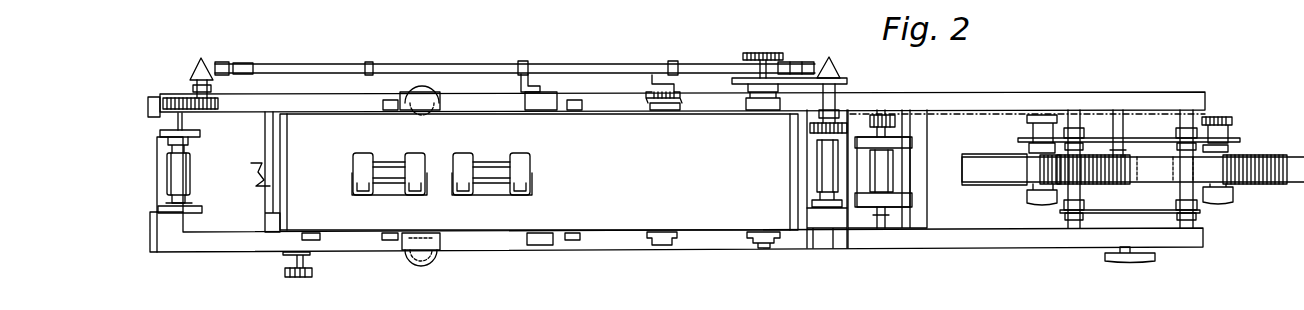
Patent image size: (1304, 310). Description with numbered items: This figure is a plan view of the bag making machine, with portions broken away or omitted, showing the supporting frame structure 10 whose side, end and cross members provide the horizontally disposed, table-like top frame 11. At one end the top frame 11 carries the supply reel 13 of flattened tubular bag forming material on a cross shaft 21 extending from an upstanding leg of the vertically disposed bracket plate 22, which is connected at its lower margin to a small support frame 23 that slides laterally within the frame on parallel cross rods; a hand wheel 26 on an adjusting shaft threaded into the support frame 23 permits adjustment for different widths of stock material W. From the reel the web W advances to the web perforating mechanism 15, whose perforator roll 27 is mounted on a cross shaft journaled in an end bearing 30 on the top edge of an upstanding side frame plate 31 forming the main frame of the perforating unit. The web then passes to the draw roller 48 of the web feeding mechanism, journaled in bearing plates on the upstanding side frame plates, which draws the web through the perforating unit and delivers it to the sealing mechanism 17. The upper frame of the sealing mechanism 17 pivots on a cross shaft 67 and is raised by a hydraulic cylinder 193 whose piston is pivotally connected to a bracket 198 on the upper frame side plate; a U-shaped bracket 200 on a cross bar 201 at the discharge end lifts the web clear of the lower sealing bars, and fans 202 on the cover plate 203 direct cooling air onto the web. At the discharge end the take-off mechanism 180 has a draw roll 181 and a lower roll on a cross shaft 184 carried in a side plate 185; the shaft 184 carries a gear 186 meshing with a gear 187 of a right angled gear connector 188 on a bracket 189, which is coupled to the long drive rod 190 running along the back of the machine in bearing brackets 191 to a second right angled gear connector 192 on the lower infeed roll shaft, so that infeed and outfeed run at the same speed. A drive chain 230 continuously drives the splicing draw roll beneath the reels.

The supporting frame structure 10 is at (188, 253).
The top frame 11 is at (1052, 96).
The reel 13 is at (1277, 184).
The web perforating mechanism 15 is at (878, 230).
The sealing mechanism 17 is at (624, 165).
The cross shaft 21 is at (1040, 200).
The bracket plate 22 is at (1240, 138).
The support frame 23 is at (1195, 118).
The hand wheel 26 is at (1142, 261).
The perforator roll 27 is at (907, 155).
The end bearing 30 is at (882, 205).
The side frame plate 31 is at (810, 236).
The draw roller 48 is at (817, 165).
The cross shaft 67 is at (765, 248).
The take-off mechanism 180 is at (173, 165).
The draw roll 181 is at (192, 167).
The cross shaft 184 is at (178, 125).
The side plate 185 is at (200, 216).
The gear 186 is at (160, 105).
The gear 187 is at (222, 100).
The right angled gear connector 188 is at (200, 58).
The bracket 189 is at (188, 86).
The drive rod 190 is at (325, 63).
The bearing bracket 191 is at (527, 77).
The right angled gear connector 192 is at (825, 57).
The hydraulic cylinder 193 is at (434, 258).
The bracket 198 is at (407, 252).
The U-shaped bracket 200 is at (272, 222).
The cross bar 201 is at (246, 178).
The fan 202 is at (425, 197).
The cover plate 203 is at (610, 230).
The drive chain 230 is at (1090, 110).
The web W is at (942, 178).